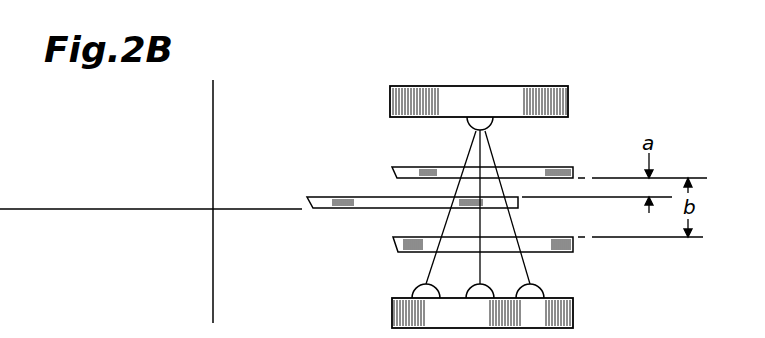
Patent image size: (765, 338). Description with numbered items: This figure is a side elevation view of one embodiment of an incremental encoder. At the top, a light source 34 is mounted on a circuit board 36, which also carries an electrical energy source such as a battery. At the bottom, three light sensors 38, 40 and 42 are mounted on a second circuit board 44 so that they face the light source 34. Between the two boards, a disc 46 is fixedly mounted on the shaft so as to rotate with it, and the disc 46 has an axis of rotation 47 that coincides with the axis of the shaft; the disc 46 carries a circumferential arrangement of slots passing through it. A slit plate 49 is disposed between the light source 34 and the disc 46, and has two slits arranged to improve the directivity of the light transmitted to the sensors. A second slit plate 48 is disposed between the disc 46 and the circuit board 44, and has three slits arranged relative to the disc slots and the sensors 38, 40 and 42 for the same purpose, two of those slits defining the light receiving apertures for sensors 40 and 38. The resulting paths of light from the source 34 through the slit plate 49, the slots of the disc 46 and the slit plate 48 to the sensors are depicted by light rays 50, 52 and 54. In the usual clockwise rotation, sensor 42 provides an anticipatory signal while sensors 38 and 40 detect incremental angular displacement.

The light source 34 is at (492, 122).
The circuit board 36 is at (568, 117).
The light sensor 38 is at (414, 290).
The light sensor 40 is at (544, 292).
The light sensor 42 is at (506, 276).
The circuit board 44 is at (574, 310).
The disc 46 is at (519, 204).
The axis of rotation 47 is at (213, 161).
The slit plate 48 is at (574, 247).
The slit plate 49 is at (575, 169).
The light ray 50 is at (468, 150).
The light ray 52 is at (490, 165).
The light ray 54 is at (470, 157).